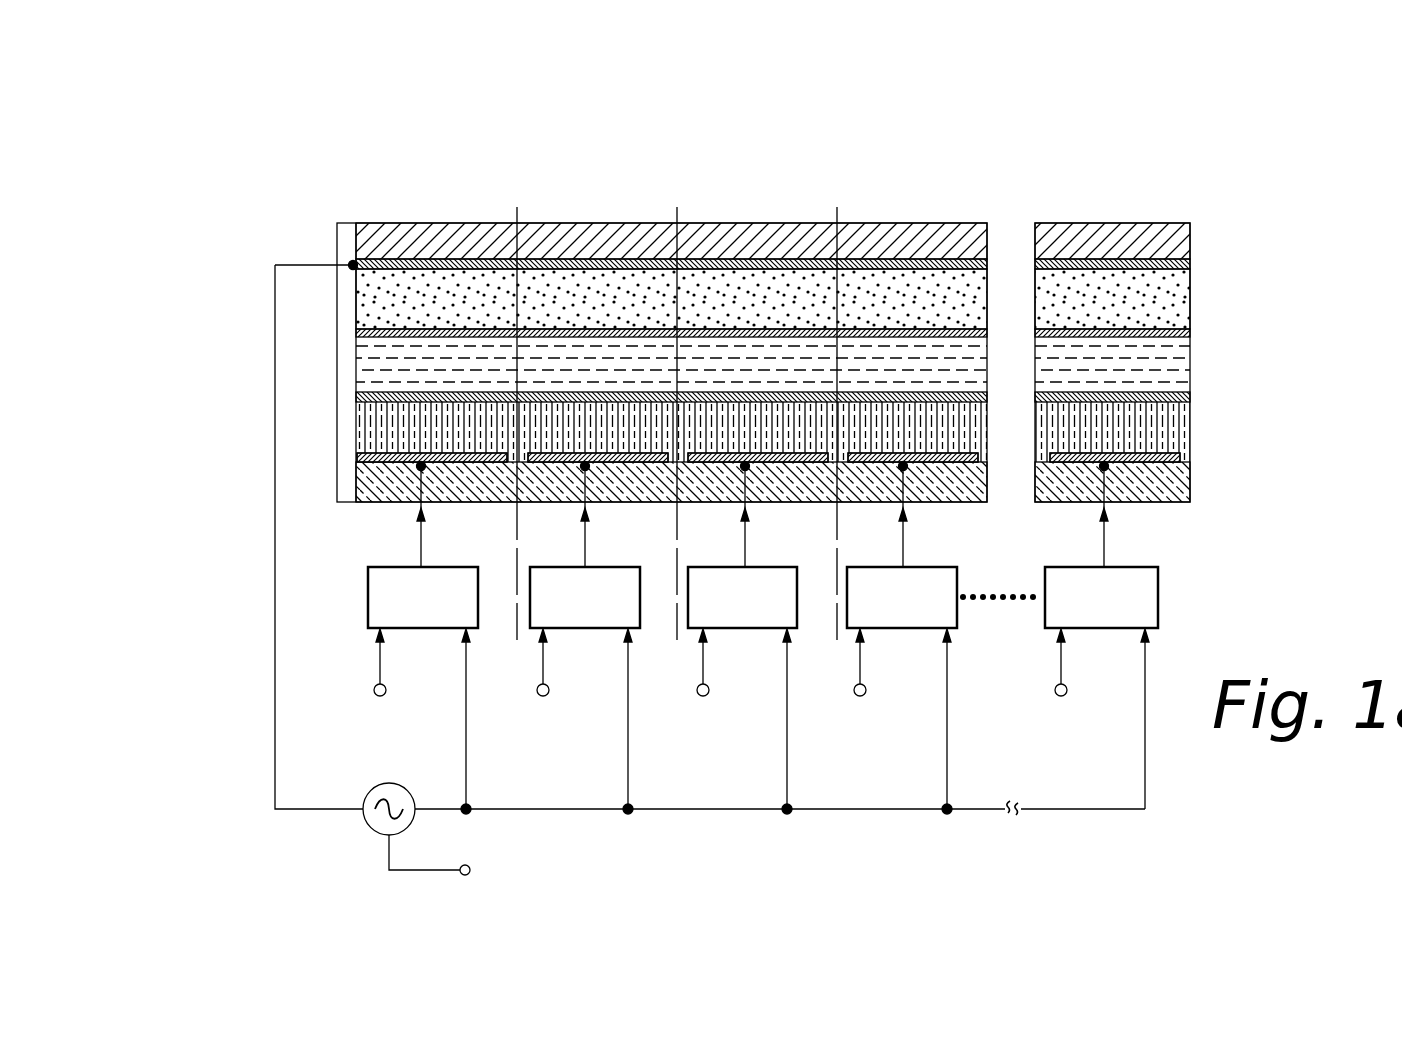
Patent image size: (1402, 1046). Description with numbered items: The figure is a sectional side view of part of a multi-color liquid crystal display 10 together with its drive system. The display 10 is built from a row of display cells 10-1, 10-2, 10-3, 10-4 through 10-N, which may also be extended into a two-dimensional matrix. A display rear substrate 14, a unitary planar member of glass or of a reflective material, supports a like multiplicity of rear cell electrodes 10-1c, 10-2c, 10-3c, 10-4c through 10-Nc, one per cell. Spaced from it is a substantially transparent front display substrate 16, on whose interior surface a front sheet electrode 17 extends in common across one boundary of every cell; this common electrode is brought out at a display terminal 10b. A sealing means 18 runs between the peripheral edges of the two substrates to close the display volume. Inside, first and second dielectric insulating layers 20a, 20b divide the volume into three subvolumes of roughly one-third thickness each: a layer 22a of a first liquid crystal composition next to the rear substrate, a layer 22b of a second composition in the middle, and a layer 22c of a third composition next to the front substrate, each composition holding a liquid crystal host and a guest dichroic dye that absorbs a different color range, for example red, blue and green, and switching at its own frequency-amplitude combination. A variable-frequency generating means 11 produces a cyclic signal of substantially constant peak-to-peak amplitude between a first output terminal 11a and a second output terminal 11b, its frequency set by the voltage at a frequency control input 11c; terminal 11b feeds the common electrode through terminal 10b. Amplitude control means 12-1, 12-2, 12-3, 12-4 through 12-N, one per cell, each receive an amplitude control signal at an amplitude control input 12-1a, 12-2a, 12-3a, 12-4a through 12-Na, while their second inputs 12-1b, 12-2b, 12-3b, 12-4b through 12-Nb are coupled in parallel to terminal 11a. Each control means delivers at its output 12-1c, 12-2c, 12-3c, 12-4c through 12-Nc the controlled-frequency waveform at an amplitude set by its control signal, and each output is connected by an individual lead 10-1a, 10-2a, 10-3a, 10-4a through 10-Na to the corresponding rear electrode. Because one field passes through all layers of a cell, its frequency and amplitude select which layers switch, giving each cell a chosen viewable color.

The multi-color liquid crystal display 10 is at (262, 177).
The display terminal 10b is at (290, 265).
The display cell 10-1 is at (450, 222).
The display cell 10-2 is at (623, 222).
The display cell 10-3 is at (780, 222).
The display cell 10-4 is at (930, 222).
The display cell 10-N is at (1140, 222).
The first segment electrode lead 10-1a is at (422, 530).
The second segment electrode lead 10-2a is at (586, 530).
The third segment electrode lead 10-3a is at (746, 530).
The fourth segment electrode lead 10-4a is at (904, 530).
The Nth segment electrode lead 10-Na is at (1105, 530).
The rear cell electrode 10-1c is at (380, 463).
The rear cell electrode 10-2c is at (553, 463).
The rear cell electrode 10-3c is at (711, 463).
The rear cell electrode 10-4c is at (870, 463).
The rear cell electrode 10-Nc is at (1060, 463).
The front display substrate 16 is at (1189, 240).
The front sheet electrode 17 is at (1190, 265).
The layer of third liquid crystal composition 22c is at (1190, 297).
The second dielectric insulating layer 20b is at (1190, 333).
The layer of second liquid crystal composition 22b is at (1190, 365).
The first dielectric insulating layer 20a is at (1190, 397).
The layer of first liquid crystal composition 22a is at (1190, 427).
The display rear substrate 14 is at (1190, 478).
The sealing means 18 is at (335, 488).
The amplitude control means 12-1 is at (423, 628).
The amplitude control means 12-2 is at (586, 628).
The amplitude control means 12-3 is at (745, 628).
The amplitude control means 12-4 is at (904, 628).
The amplitude control means 12-N is at (1104, 628).
The amplitude control input 12-1a is at (379, 636).
The amplitude control input 12-2a is at (543, 636).
The amplitude control input 12-3a is at (703, 636).
The amplitude control input 12-4a is at (860, 636).
The amplitude control input 12-Na is at (1061, 636).
The second input 12-1b is at (467, 770).
The second input 12-2b is at (629, 770).
The second input 12-3b is at (788, 770).
The second input 12-4b is at (948, 770).
The second input 12-Nb is at (1146, 770).
The control means output 12-1c is at (420, 553).
The control means output 12-2c is at (585, 553).
The control means output 12-3c is at (745, 553).
The control means output 12-4c is at (903, 553).
The control means output 12-Nc is at (1104, 553).
The variable-frequency generating means 11 is at (369, 827).
The first output terminal 11a is at (425, 809).
The second output terminal 11b is at (301, 809).
The frequency control input 11c is at (460, 874).